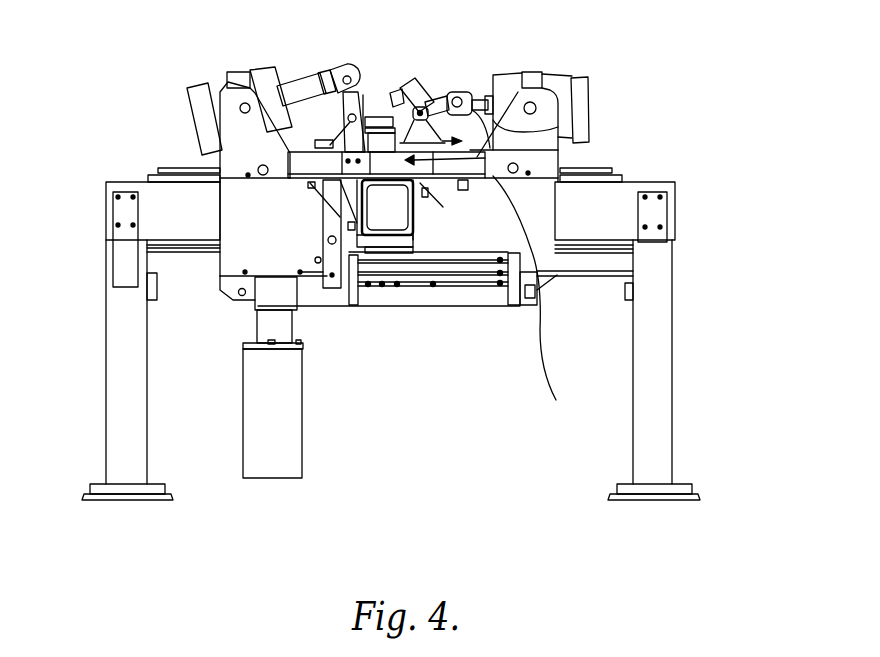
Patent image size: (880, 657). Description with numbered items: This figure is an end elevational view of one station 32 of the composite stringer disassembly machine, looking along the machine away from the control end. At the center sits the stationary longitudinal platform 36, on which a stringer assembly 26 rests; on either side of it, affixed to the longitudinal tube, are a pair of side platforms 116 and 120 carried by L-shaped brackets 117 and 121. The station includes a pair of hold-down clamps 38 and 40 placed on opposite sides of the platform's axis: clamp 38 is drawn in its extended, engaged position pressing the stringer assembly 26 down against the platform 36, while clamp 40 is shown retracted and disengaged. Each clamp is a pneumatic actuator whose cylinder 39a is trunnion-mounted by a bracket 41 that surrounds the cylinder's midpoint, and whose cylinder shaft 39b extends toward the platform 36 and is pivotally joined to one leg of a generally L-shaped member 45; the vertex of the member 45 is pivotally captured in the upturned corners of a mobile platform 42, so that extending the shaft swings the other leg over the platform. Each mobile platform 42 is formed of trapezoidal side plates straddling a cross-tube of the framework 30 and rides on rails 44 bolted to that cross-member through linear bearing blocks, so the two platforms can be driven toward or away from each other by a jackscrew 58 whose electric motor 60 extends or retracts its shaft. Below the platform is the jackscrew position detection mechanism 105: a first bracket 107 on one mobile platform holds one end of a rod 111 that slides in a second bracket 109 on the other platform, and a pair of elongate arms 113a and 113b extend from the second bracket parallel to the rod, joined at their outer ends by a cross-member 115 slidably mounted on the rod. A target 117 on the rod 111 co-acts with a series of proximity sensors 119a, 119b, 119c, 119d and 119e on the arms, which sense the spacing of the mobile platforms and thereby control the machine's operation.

The stringer assembly 26 is at (425, 105).
The framework 30 is at (670, 462).
The station 32 is at (722, 190).
The longitudinal platform 36 is at (558, 150).
The hold-down clamp 38 is at (176, 106).
The pneumatic cylinder 39a is at (222, 79).
The cylinder shaft 39b is at (297, 83).
The hold-down clamp 40 is at (600, 86).
The bracket 41 is at (238, 73).
The mobile platform 42 is at (235, 199).
The rail 44 is at (160, 170).
The L-shaped member 45 is at (395, 88).
The jackscrew 58 is at (330, 484).
The electric motor 60 is at (257, 463).
The jackscrew position detection mechanism 105 is at (467, 318).
The first bracket 107 is at (255, 312).
The second bracket 109 is at (546, 301).
The rod 111 is at (593, 290).
The elongate arm 113a is at (349, 300).
The elongate arm 113b is at (482, 300).
The cross-member 115 is at (357, 310).
The side platform 116 is at (288, 172).
The L-shaped bracket / target 117 is at (322, 183).
The proximity sensor 119a is at (382, 286).
The proximity sensor 119b is at (368, 287).
The proximity sensor 119c is at (397, 287).
The proximity sensor 119d is at (433, 287).
The proximity sensor 119e is at (498, 258).
The side platform 120 is at (522, 305).
The L-shaped bracket 121 is at (440, 210).